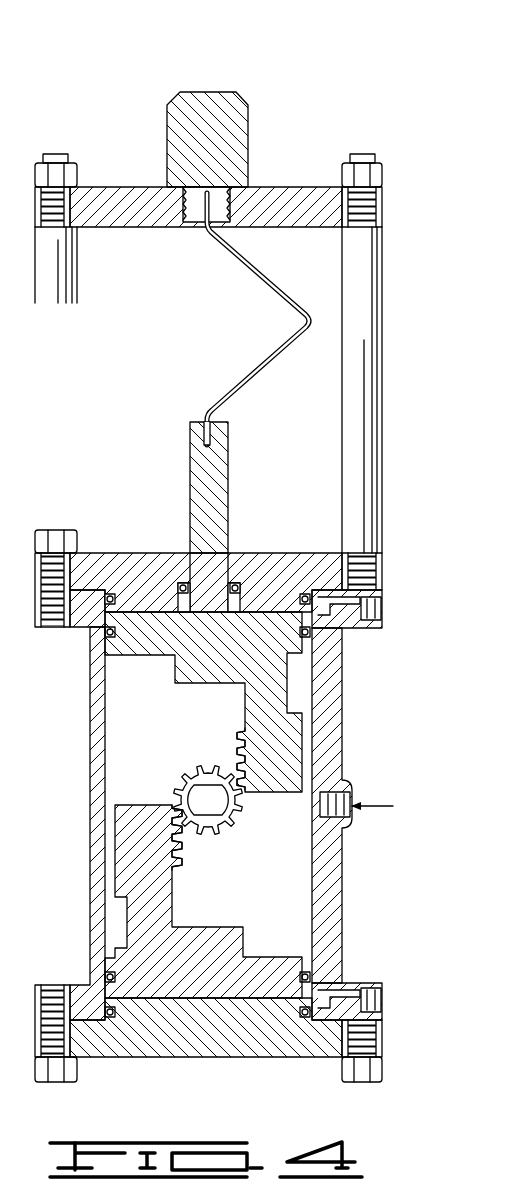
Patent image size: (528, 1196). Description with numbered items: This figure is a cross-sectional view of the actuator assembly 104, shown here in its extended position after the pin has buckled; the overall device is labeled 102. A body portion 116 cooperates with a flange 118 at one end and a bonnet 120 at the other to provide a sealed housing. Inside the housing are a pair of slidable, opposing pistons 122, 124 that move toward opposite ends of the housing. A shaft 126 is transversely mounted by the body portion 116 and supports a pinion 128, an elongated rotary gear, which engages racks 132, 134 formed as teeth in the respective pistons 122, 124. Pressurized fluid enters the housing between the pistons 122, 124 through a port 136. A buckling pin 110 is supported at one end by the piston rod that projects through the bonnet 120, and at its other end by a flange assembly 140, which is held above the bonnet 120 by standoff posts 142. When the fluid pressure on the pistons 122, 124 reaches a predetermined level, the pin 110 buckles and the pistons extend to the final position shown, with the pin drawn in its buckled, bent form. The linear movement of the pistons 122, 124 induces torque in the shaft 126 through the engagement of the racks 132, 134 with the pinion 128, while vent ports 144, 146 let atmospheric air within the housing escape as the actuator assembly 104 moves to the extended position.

The actuator assembly 102 is at (125, 78).
The actuator assembly 104 is at (70, 825).
The buckling pin 110 is at (258, 372).
The body portion 116 is at (90, 765).
The flange 118 is at (158, 1050).
The bonnet 120 is at (148, 558).
The piston 122 is at (148, 650).
The piston 124 is at (137, 930).
The shaft 126 is at (218, 808).
The pinion 128 is at (205, 772).
The rack 132 is at (178, 858).
The rack 134 is at (240, 735).
The port 136 is at (350, 818).
The flange assembly 140 is at (268, 186).
The standoff posts 142 is at (65, 275).
The vent port 144 is at (393, 607).
The vent port 146 is at (375, 1000).